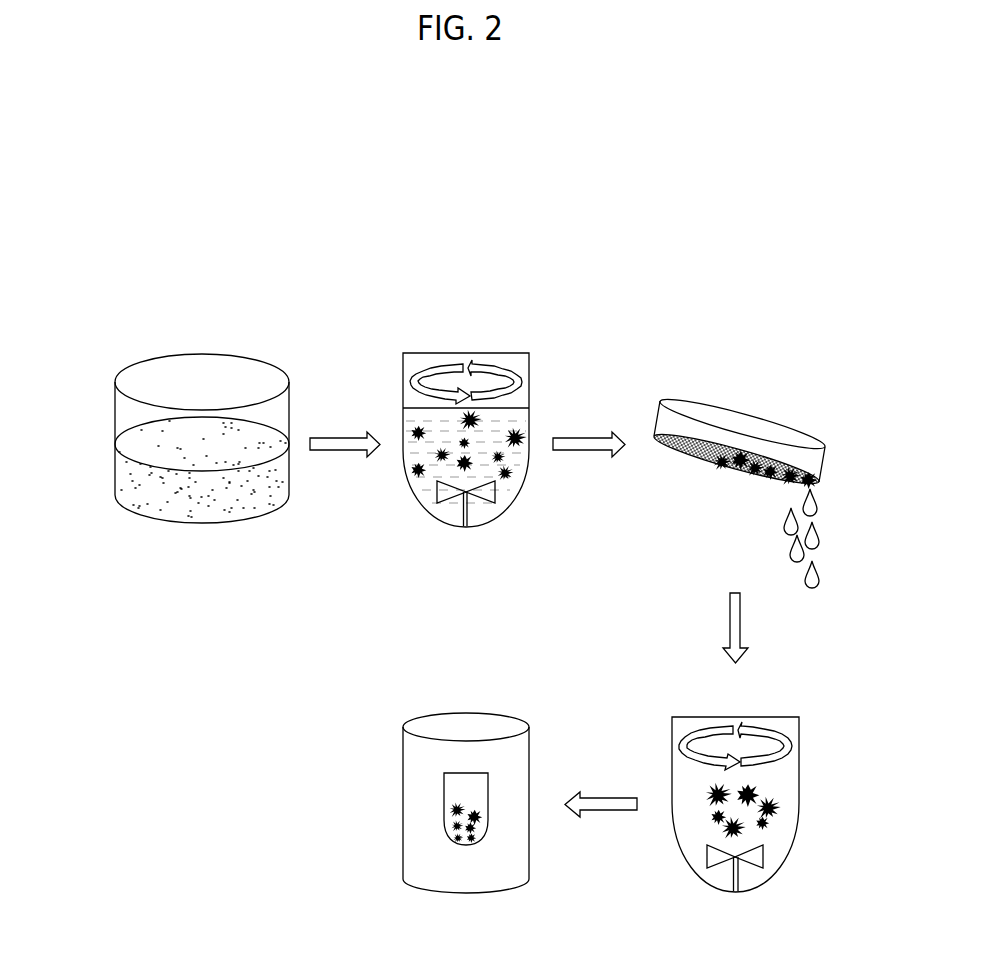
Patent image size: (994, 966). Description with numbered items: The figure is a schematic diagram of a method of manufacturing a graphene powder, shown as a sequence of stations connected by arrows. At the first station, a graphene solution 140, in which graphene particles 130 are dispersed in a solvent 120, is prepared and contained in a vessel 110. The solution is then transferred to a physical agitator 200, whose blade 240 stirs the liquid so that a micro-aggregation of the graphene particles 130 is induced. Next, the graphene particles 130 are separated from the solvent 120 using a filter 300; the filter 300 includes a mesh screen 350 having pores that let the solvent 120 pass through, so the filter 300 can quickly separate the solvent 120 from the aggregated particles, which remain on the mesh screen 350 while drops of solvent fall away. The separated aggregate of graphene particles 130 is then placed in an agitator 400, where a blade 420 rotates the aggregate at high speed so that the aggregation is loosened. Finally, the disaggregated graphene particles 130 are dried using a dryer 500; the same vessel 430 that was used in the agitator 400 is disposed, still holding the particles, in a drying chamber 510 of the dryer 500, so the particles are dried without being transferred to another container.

The vessel 110 is at (115, 414).
The solvent 120 is at (128, 485).
The graphene particles 130 is at (182, 502).
The graphene solution 140 is at (252, 437).
The physical agitator 200 is at (512, 455).
The blade 240 is at (483, 493).
The filter 300 is at (742, 476).
The mesh screen 350 is at (670, 457).
The agitator 400 is at (666, 830).
The blade 420 is at (753, 858).
The vessel 430 is at (800, 778).
The dryer 500 is at (477, 782).
The drying chamber 510 is at (403, 778).